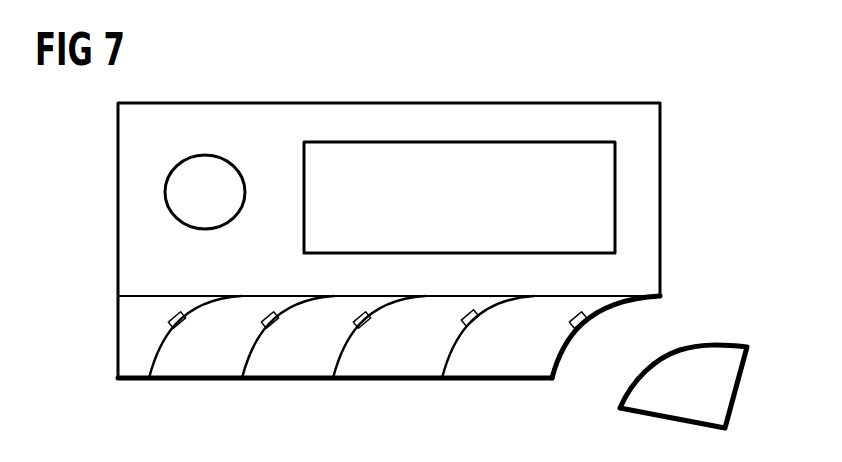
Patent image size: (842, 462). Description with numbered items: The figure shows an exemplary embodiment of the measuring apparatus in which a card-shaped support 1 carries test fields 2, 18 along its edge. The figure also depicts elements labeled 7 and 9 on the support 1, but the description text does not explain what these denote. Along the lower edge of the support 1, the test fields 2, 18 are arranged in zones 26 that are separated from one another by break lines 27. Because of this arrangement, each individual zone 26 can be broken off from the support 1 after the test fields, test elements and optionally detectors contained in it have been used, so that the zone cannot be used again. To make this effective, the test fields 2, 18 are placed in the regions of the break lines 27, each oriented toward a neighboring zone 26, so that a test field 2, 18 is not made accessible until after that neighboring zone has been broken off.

The card-shaped support 1 is at (136, 187).
The display 7 is at (313, 180).
The control knob / button 9 is at (193, 207).
The test field 18 is at (461, 323).
The test field 2 is at (583, 323).
The zone 26 is at (403, 367).
The break line 27 is at (253, 353).